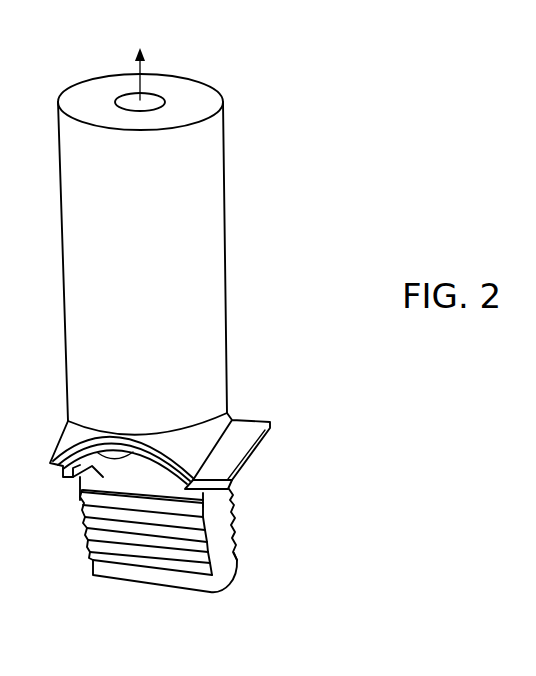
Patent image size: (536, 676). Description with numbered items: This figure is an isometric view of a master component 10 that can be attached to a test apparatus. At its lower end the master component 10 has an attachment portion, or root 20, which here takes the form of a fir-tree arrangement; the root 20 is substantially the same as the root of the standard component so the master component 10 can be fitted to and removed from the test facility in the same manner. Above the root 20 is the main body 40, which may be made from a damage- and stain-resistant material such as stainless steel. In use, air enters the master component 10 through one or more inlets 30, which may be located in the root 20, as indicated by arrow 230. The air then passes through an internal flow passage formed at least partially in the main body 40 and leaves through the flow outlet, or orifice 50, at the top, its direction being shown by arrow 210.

The master component 10 is at (322, 170).
The root 20 is at (233, 523).
The inlets 30 is at (105, 585).
The main body 40 is at (208, 255).
The flow outlet 50 is at (155, 100).
The arrow 210 is at (138, 59).
The arrow 230 is at (148, 591).